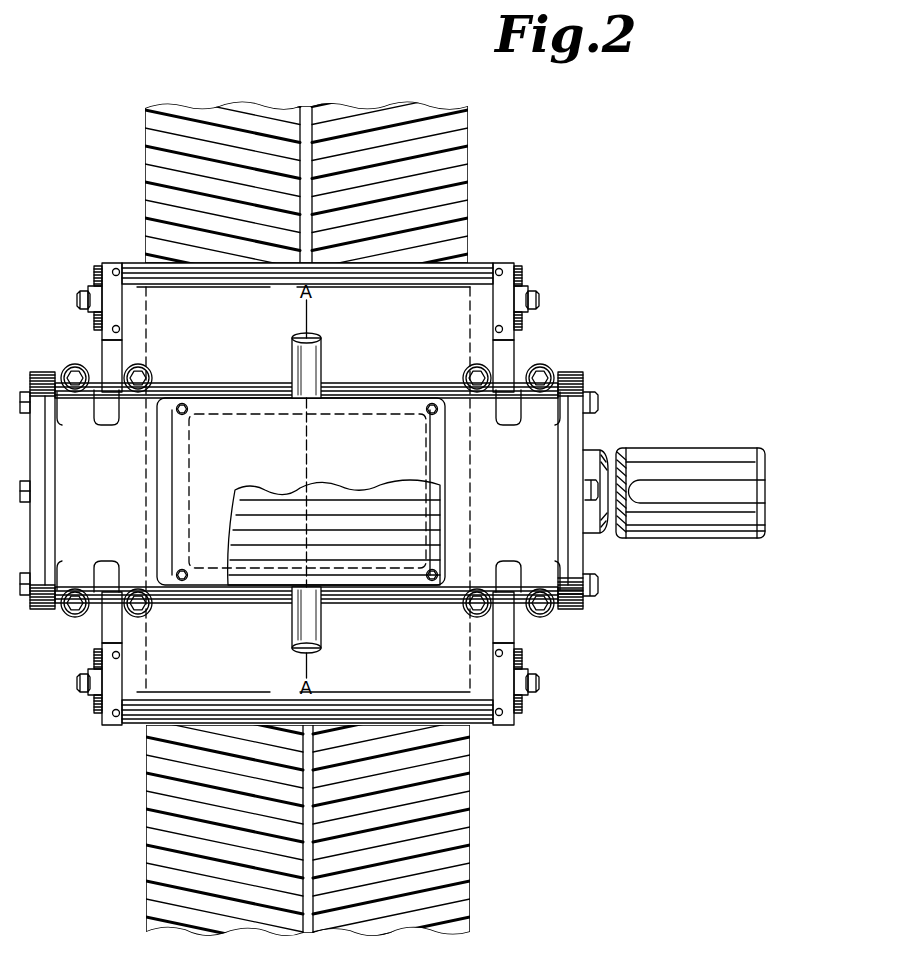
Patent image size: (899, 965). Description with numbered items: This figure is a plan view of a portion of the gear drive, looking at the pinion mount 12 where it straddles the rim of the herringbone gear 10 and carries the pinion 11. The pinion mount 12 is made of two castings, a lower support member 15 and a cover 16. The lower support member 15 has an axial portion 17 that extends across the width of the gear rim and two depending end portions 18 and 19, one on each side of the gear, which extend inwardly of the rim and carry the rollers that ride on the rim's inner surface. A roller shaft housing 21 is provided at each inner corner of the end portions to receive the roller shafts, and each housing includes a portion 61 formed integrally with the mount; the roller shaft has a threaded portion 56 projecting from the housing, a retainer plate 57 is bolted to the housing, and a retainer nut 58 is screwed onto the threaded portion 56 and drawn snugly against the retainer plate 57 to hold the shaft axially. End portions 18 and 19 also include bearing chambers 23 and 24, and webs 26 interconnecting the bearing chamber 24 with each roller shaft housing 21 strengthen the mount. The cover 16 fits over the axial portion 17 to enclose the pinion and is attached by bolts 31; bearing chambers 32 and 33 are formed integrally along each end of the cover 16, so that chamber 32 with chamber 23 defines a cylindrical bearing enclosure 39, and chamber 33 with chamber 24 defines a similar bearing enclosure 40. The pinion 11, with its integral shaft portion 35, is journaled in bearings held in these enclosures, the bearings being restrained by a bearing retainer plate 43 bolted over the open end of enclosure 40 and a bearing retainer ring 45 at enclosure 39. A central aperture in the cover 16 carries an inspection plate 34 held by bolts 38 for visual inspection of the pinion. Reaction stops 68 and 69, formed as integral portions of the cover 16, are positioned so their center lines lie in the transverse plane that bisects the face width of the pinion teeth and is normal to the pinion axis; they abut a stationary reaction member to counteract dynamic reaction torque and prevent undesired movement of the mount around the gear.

The herringbone gear 10 is at (455, 156).
The pinion 11 is at (375, 497).
The pinion mount 12 is at (478, 262).
The lower support member 15 is at (130, 262).
The cover 16 is at (416, 398).
The axial portion 17 is at (424, 329).
The end portion 18 is at (514, 350).
The end portion 19 is at (102, 347).
The roller shaft housing 21 is at (104, 263).
The bearing chamber 23 is at (562, 372).
The bearing chamber 24 is at (53, 372).
The webs 26 is at (92, 622).
The bolts 31 is at (126, 378).
The bearing chamber 32 is at (552, 446).
The bearing chamber 33 is at (58, 532).
The inspection plate 34 is at (442, 479).
The shaft portion 35 is at (675, 458).
The bolts 38 is at (183, 403).
The bearing enclosure 39 is at (585, 557).
The bearing enclosure 40 is at (30, 448).
The bearing retainer plate 43 is at (36, 572).
The bearing retainer ring 45 is at (590, 384).
The threaded portion 56 is at (77, 300).
The retainer plate 57 is at (94, 274).
The retainer nut 58 is at (88, 296).
The portion 61 is at (94, 322).
The reaction stop 68 is at (323, 356).
The reaction stop 69 is at (323, 630).